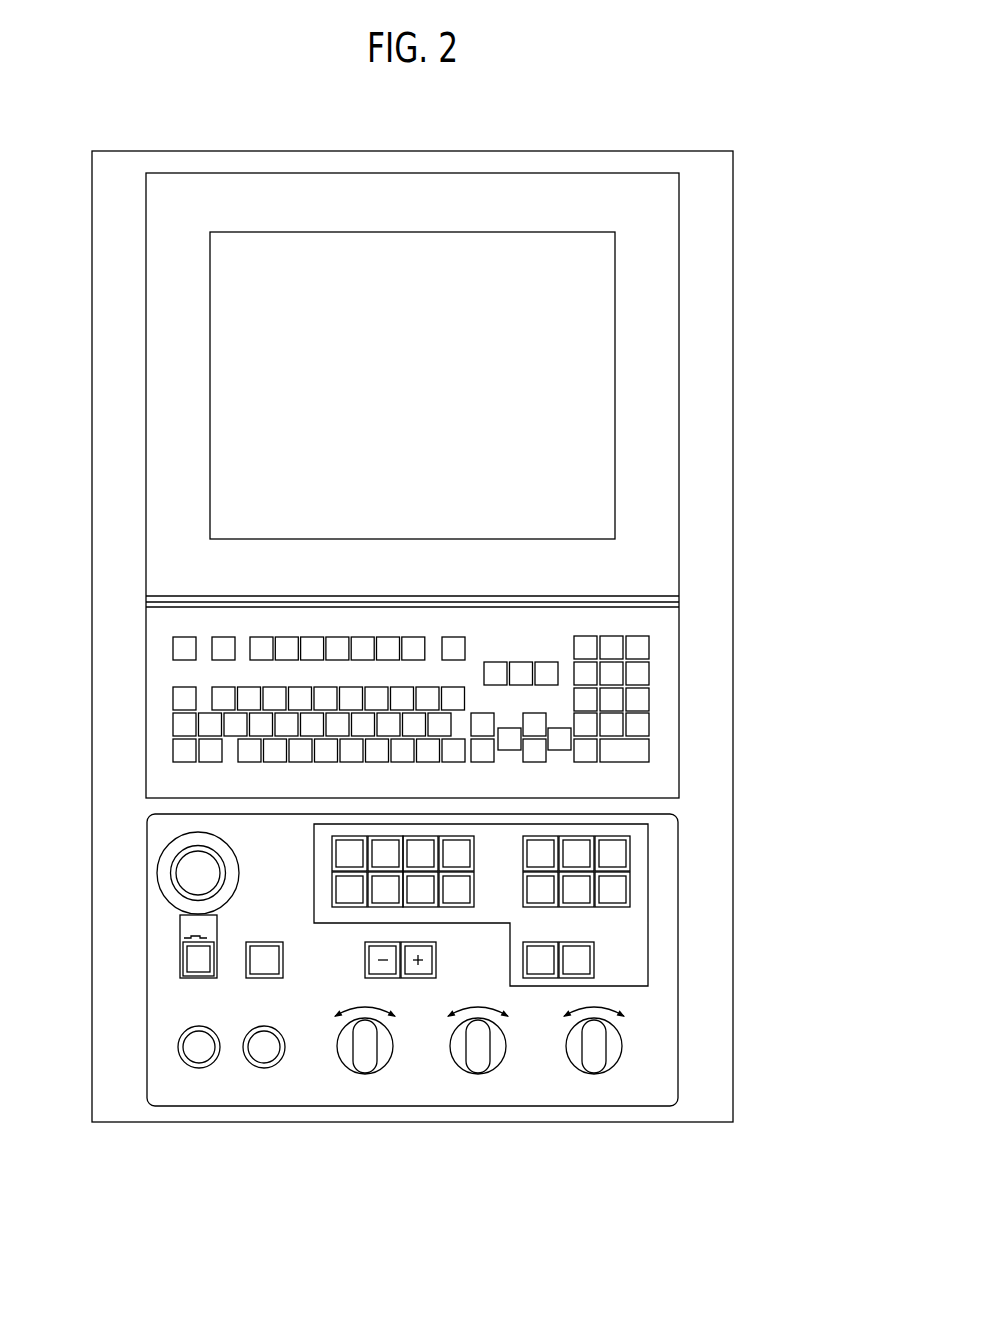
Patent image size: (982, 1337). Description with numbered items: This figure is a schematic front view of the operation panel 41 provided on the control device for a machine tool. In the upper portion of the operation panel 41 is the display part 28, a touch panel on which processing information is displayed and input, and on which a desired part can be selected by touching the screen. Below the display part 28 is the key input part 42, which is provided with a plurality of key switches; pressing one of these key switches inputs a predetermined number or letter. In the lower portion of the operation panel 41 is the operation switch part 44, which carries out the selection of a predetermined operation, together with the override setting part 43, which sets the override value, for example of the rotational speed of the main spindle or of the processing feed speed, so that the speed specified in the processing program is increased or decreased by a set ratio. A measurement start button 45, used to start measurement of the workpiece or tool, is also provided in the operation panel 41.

The operation panel 41 is at (644, 132).
The display part 28 is at (567, 384).
The key input part 42 is at (648, 697).
The operation switch part 44 is at (648, 888).
The override setting part 43 is at (381, 1056).
The measurement start button 45 is at (198, 1046).